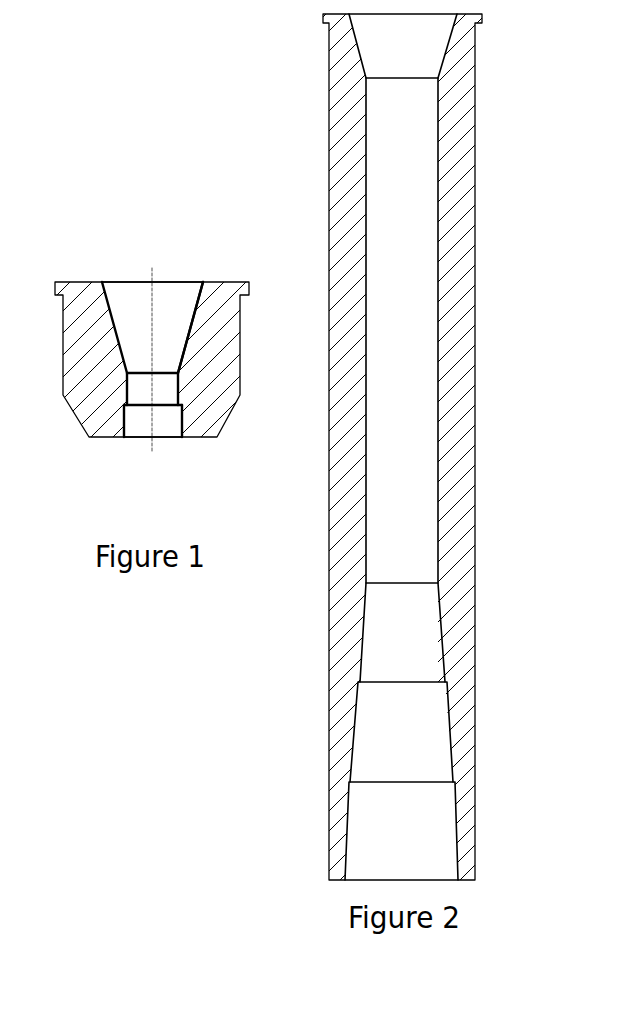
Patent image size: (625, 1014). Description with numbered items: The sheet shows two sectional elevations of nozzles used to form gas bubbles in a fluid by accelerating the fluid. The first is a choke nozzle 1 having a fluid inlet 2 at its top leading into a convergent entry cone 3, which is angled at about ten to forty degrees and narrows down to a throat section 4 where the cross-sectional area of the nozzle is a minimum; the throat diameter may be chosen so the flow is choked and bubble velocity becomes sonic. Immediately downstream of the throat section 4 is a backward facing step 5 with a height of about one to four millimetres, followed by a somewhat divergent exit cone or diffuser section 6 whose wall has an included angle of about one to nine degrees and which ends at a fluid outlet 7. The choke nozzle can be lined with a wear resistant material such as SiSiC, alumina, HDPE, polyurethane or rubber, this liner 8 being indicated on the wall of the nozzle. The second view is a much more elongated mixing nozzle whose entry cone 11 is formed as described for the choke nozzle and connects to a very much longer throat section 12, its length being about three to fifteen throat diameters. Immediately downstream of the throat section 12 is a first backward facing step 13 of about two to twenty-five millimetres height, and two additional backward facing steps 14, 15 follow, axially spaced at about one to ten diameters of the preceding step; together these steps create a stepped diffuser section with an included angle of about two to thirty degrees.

In FIG. 1, the choke nozzle 1 is at (79, 327).
In FIG. 1, the fluid inlet 2 is at (121, 281).
In FIG. 1, the convergent entry cone 3 is at (142, 325).
In FIG. 1, the throat section 4 is at (161, 390).
In FIG. 1, the backward facing step 5 is at (164, 385).
In FIG. 1, the diffuser section 6 is at (133, 422).
In FIG. 1, the fluid outlet 7 is at (172, 439).
In FIG. 1, the liner 8 is at (205, 320).
In FIG. 2, the entry cone 11 is at (410, 45).
In FIG. 2, the throat section 12 is at (412, 312).
In FIG. 2, the first backward facing step 13 is at (424, 584).
In FIG. 2, the additional backward facing step 14 is at (422, 683).
In FIG. 2, the additional backward facing step 15 is at (420, 783).